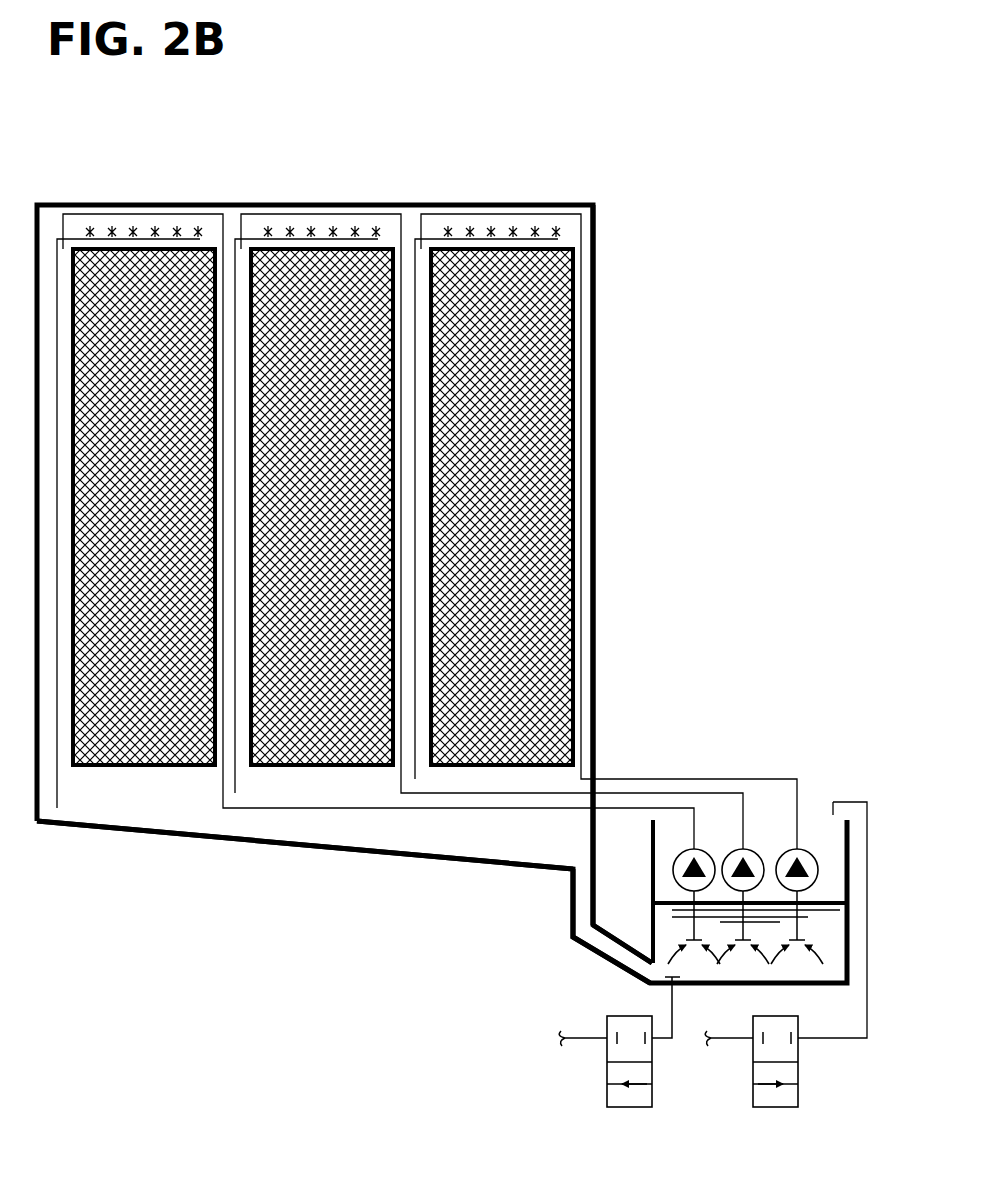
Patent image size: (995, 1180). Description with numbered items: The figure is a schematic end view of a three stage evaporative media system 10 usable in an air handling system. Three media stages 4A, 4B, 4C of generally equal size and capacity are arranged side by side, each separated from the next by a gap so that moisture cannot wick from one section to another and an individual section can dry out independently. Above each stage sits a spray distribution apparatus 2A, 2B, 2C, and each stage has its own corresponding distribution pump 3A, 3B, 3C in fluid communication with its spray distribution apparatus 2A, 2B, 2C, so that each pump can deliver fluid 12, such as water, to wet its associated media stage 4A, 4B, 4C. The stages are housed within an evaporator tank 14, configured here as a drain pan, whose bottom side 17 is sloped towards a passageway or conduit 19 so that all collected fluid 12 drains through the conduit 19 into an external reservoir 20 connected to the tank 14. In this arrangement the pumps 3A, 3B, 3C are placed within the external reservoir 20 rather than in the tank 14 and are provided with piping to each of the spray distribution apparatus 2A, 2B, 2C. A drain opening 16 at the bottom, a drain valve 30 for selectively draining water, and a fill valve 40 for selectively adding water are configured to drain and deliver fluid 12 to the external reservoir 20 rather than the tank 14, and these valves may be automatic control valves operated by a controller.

The evaporative media system 10 is at (478, 157).
The spray distribution apparatus 2A is at (122, 237).
The spray distribution apparatus 2B is at (301, 237).
The spray distribution apparatus 2C is at (483, 237).
The media stage 4A is at (110, 767).
The media stage 4B is at (300, 767).
The media stage 4C is at (577, 657).
The distribution pump 3A is at (701, 853).
The distribution pump 3B is at (750, 853).
The distribution pump 3C is at (801, 853).
The fluid 12 is at (829, 977).
The evaporator tank 14 is at (593, 858).
The drain opening 16 is at (677, 986).
The bottom side 17 is at (445, 860).
The conduit 19 is at (619, 938).
The external reservoir 20 is at (797, 987).
The drain valve 30 is at (653, 1092).
The fill valve 40 is at (800, 1095).